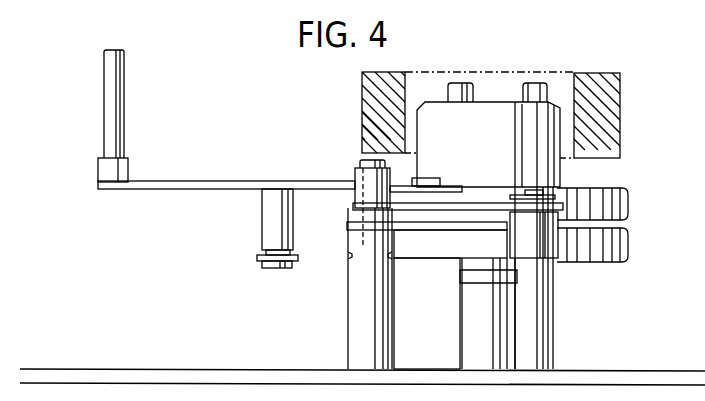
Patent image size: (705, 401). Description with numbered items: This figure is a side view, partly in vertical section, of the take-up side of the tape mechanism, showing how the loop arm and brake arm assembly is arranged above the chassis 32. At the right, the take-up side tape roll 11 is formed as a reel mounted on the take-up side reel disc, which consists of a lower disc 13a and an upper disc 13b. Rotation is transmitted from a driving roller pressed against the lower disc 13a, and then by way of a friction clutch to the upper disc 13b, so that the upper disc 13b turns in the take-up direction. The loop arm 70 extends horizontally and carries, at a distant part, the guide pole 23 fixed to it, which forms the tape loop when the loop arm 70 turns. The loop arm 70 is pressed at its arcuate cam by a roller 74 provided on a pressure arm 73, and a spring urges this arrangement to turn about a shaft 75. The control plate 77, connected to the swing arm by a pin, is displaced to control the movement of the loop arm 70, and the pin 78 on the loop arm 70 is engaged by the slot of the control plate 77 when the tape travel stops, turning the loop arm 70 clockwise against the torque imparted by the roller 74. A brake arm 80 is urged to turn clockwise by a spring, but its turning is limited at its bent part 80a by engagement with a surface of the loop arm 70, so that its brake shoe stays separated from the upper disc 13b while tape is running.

The take-up side tape roll 11 is at (360, 93).
The guide pole 23 is at (125, 66).
The loop arm 70 is at (224, 181).
The pressure arm 73 is at (485, 203).
The roller 74 is at (390, 178).
The shaft 75 is at (363, 240).
The control plate 77 is at (258, 260).
The pin 78 is at (265, 222).
The brake arm 80 is at (432, 233).
The bent part 80a is at (432, 215).
The lower disc 13a is at (623, 242).
The upper disc 13b is at (623, 202).
The chassis 32 is at (130, 369).